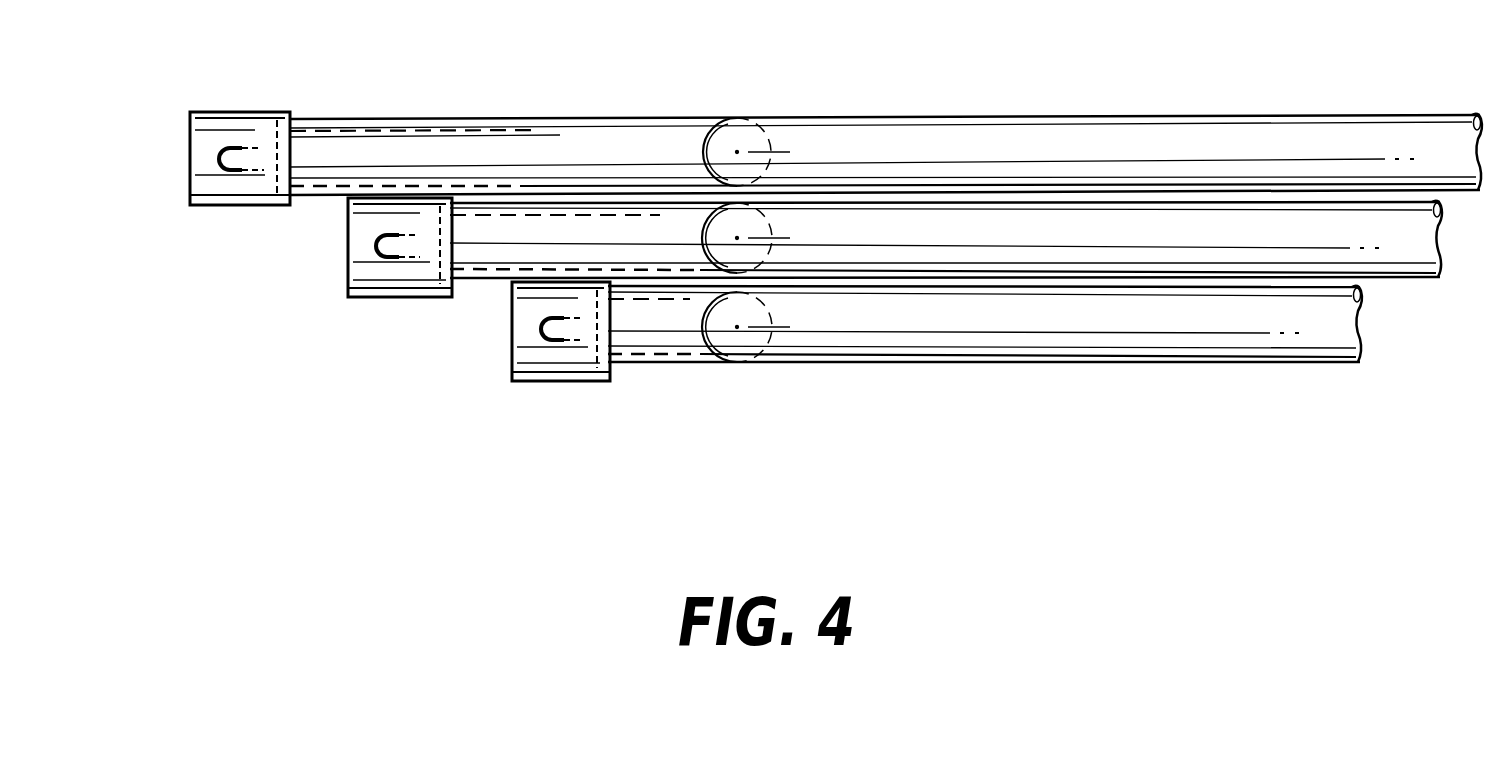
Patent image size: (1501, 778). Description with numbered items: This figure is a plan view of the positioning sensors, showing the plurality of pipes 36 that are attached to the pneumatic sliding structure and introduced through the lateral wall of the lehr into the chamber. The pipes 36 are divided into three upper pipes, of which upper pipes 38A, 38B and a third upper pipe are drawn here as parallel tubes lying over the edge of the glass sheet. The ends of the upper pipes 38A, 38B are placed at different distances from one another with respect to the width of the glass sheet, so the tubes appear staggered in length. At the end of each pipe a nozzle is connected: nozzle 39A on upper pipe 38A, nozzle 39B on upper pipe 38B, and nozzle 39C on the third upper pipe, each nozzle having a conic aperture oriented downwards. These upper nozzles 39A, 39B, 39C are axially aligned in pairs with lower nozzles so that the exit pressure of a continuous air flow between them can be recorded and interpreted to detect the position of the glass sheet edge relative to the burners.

The pipes 36 is at (811, 241).
The upper pipe 38A is at (360, 119).
The upper pipe 38B is at (511, 237).
The nozzle 39A is at (248, 212).
The nozzle 39B is at (390, 297).
The nozzle 39C is at (558, 382).